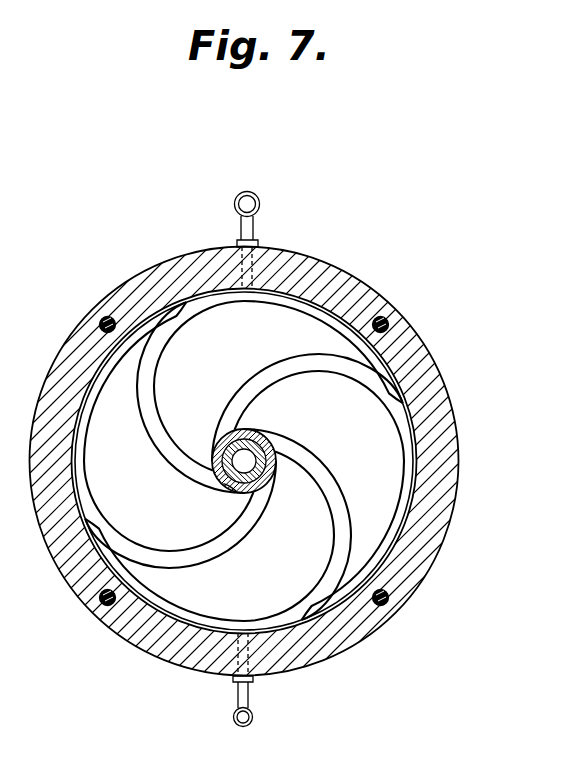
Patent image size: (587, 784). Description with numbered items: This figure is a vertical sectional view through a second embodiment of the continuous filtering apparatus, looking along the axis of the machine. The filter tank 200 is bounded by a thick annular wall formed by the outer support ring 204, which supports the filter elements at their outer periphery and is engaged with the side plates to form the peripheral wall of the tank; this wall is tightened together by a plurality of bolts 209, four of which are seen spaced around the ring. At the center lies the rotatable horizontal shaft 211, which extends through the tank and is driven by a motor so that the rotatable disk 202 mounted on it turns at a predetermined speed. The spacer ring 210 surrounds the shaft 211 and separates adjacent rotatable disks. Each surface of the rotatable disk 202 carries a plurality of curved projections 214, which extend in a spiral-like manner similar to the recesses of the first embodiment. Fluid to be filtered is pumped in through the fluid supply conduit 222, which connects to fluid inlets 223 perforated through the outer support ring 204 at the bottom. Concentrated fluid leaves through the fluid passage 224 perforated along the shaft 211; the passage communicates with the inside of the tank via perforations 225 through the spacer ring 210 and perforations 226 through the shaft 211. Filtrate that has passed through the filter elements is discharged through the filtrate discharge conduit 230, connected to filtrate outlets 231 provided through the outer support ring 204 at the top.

The filter tank 200 is at (384, 292).
The rotatable disk 202 is at (161, 590).
The outer support ring 204 is at (433, 488).
The bolts 209 is at (105, 312).
The spacer ring 210 is at (259, 431).
The rotatable horizontal shaft 211 is at (233, 487).
The projections 214 is at (155, 367).
The fluid supply conduit 222 is at (253, 717).
The fluid inlets 223 is at (234, 668).
The fluid passage 224 is at (257, 468).
The perforations 225 is at (232, 437).
The perforations 226 is at (266, 447).
The filtrate discharge conduit 230 is at (257, 195).
The filtrate outlets 231 is at (258, 262).